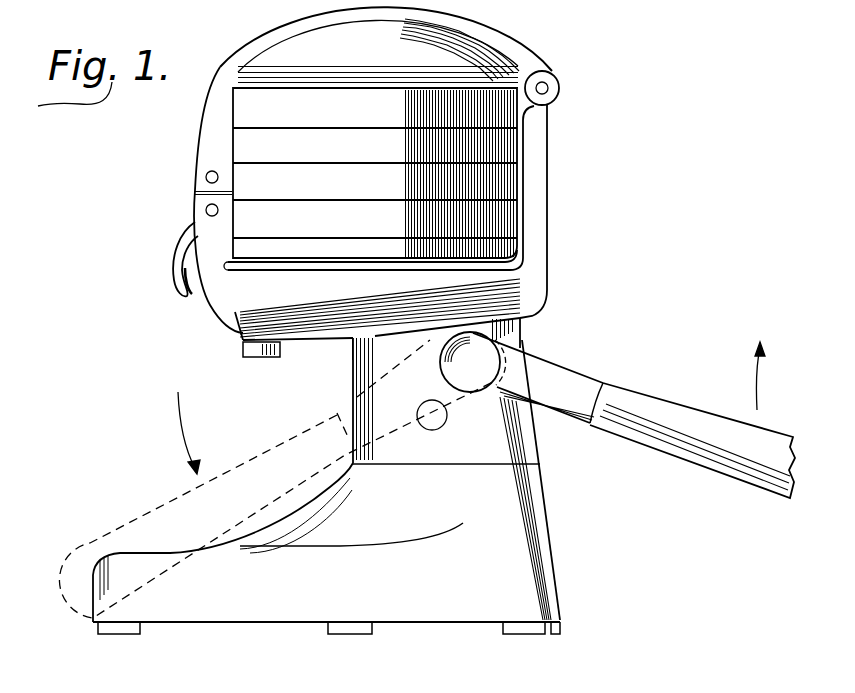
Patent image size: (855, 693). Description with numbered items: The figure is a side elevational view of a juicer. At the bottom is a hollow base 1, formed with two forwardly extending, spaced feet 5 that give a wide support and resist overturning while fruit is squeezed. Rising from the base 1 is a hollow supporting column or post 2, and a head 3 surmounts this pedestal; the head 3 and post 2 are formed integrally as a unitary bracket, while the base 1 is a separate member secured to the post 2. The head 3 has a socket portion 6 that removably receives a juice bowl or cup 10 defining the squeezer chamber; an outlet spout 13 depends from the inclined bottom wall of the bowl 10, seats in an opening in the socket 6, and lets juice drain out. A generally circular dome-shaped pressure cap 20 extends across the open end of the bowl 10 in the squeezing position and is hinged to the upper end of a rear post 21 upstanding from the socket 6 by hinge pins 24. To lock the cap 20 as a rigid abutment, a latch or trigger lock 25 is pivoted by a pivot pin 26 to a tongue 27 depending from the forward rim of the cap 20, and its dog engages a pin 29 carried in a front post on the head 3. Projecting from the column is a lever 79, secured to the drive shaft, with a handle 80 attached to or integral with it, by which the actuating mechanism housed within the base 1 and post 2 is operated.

The base 1 is at (523, 556).
The supporting column or post 2 is at (497, 439).
The head 3 is at (480, 283).
The feet 5 is at (175, 597).
The socket portion 6 is at (232, 314).
The juice bowl or cup 10 is at (242, 110).
The outlet spout 13 is at (258, 358).
The pressure cap 20 is at (425, 33).
The rear post 21 is at (540, 142).
The hinge pins 24 is at (548, 88).
The latch or trigger lock 25 is at (178, 229).
The pivot pin 26 is at (206, 173).
The tongue 27 is at (214, 93).
The pin 29 is at (206, 210).
The lever 79 is at (560, 375).
The handle 80 is at (762, 465).